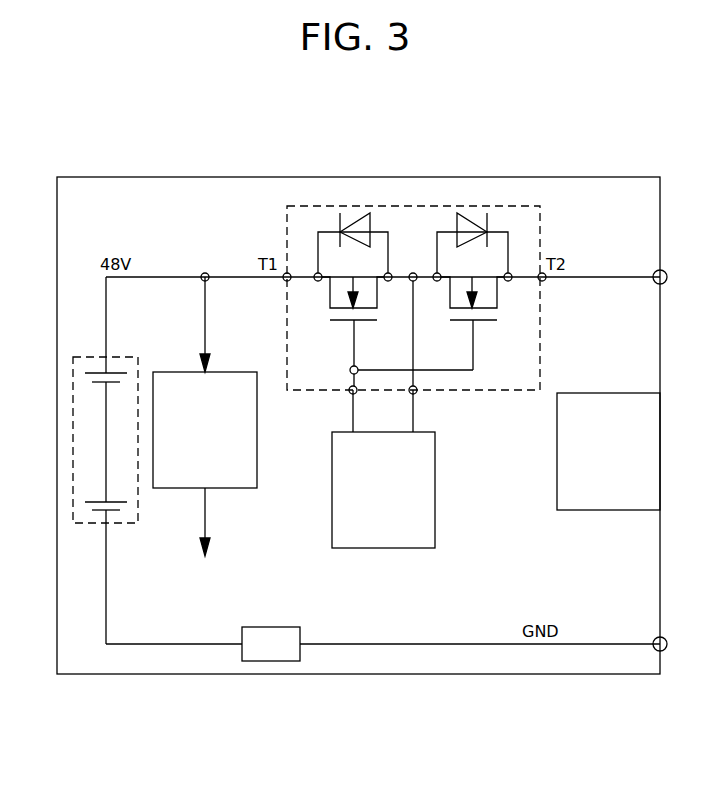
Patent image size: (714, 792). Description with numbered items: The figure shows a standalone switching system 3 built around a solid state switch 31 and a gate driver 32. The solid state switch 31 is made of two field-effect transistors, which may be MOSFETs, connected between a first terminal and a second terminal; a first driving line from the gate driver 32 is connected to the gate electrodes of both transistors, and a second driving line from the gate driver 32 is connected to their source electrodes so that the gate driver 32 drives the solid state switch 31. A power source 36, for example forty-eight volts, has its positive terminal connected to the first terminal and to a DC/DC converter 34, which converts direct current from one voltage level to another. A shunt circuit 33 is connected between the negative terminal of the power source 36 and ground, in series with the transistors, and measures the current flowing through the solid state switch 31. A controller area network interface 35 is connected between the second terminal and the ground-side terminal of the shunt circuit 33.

The switching system 3 is at (187, 177).
The solid state switch 31 is at (412, 206).
The gate driver 32 is at (383, 469).
The shunt circuit 33 is at (270, 661).
The DC/DC converter 34 is at (205, 416).
The controller area network (CAN) interface 35 is at (608, 451).
The power source 36 is at (73, 438).